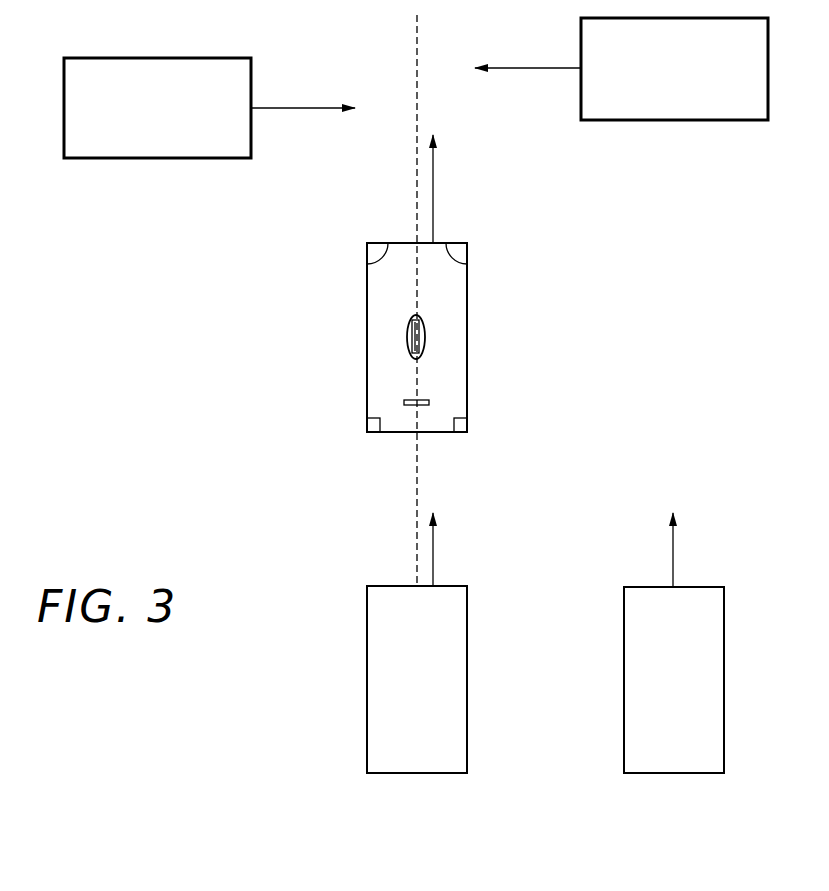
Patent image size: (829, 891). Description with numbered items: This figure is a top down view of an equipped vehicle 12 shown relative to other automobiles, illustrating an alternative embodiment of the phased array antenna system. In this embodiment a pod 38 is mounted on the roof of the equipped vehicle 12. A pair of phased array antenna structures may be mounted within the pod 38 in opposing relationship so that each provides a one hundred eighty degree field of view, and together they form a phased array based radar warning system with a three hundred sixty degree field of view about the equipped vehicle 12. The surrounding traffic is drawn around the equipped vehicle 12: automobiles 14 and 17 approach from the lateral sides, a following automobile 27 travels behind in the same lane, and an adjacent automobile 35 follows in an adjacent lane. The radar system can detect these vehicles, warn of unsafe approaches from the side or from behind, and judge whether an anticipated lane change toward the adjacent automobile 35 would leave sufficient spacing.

The automobile 17 is at (130, 158).
The automobile 14 is at (679, 120).
The equipped vehicle 12 is at (367, 296).
The pod 38 is at (428, 336).
The following automobile 27 is at (367, 684).
The adjacent automobile 35 is at (624, 680).